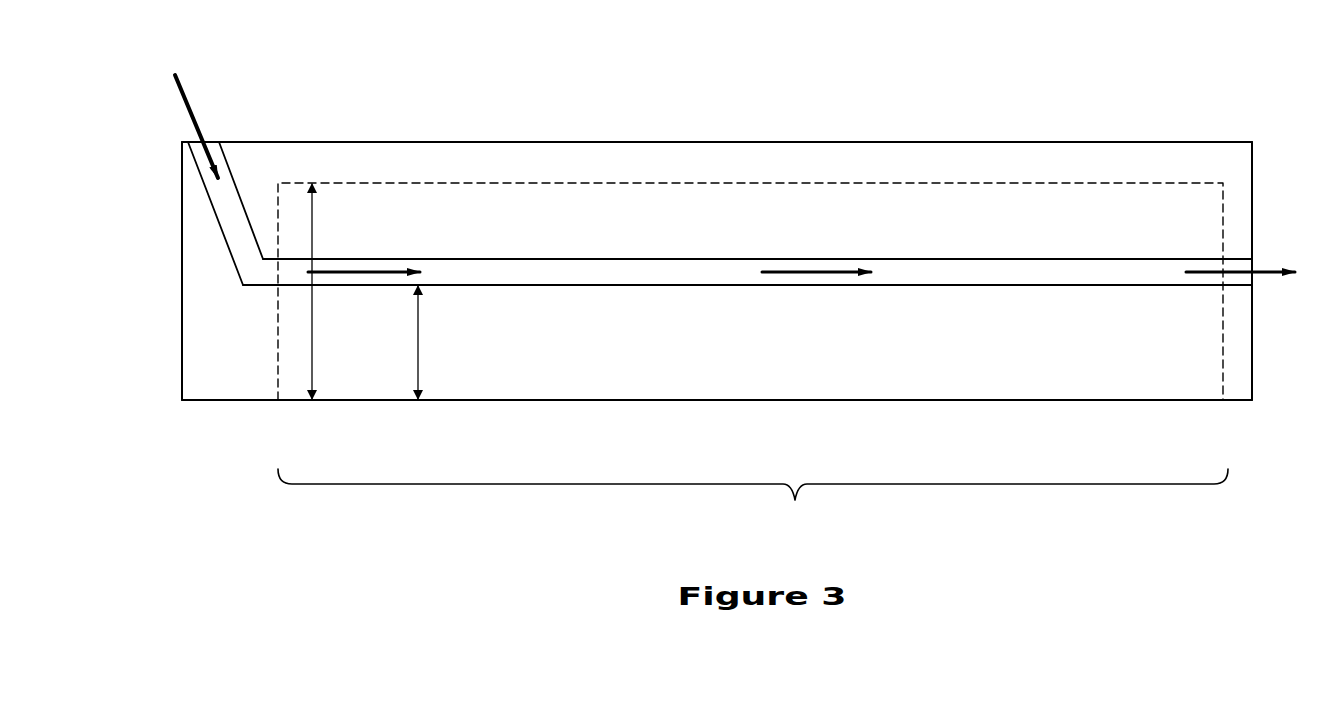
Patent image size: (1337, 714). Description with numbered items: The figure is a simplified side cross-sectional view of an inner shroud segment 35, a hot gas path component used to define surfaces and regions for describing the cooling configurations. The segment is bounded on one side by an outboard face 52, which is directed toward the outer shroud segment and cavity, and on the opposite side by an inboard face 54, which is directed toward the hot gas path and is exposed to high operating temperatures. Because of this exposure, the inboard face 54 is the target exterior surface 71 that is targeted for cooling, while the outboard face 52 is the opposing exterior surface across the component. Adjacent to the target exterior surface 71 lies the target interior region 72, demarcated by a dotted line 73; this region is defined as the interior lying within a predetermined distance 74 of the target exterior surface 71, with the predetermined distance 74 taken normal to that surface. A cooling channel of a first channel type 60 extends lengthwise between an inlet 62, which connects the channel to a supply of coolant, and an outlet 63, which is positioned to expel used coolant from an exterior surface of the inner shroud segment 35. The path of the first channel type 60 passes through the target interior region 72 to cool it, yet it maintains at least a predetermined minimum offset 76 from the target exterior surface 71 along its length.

The inner shroud segment 35 is at (836, 100).
The outboard face 52 is at (557, 142).
The inboard face 54 is at (515, 400).
The first channel type 60 is at (543, 272).
The inlet 62 is at (212, 140).
The outlet 63 is at (1252, 283).
The target exterior surface 71 is at (753, 502).
The target interior region 72 is at (558, 240).
The dotted line 73 is at (445, 182).
The predetermined distance 74 is at (311, 291).
The predetermined minimum offset 76 is at (417, 342).